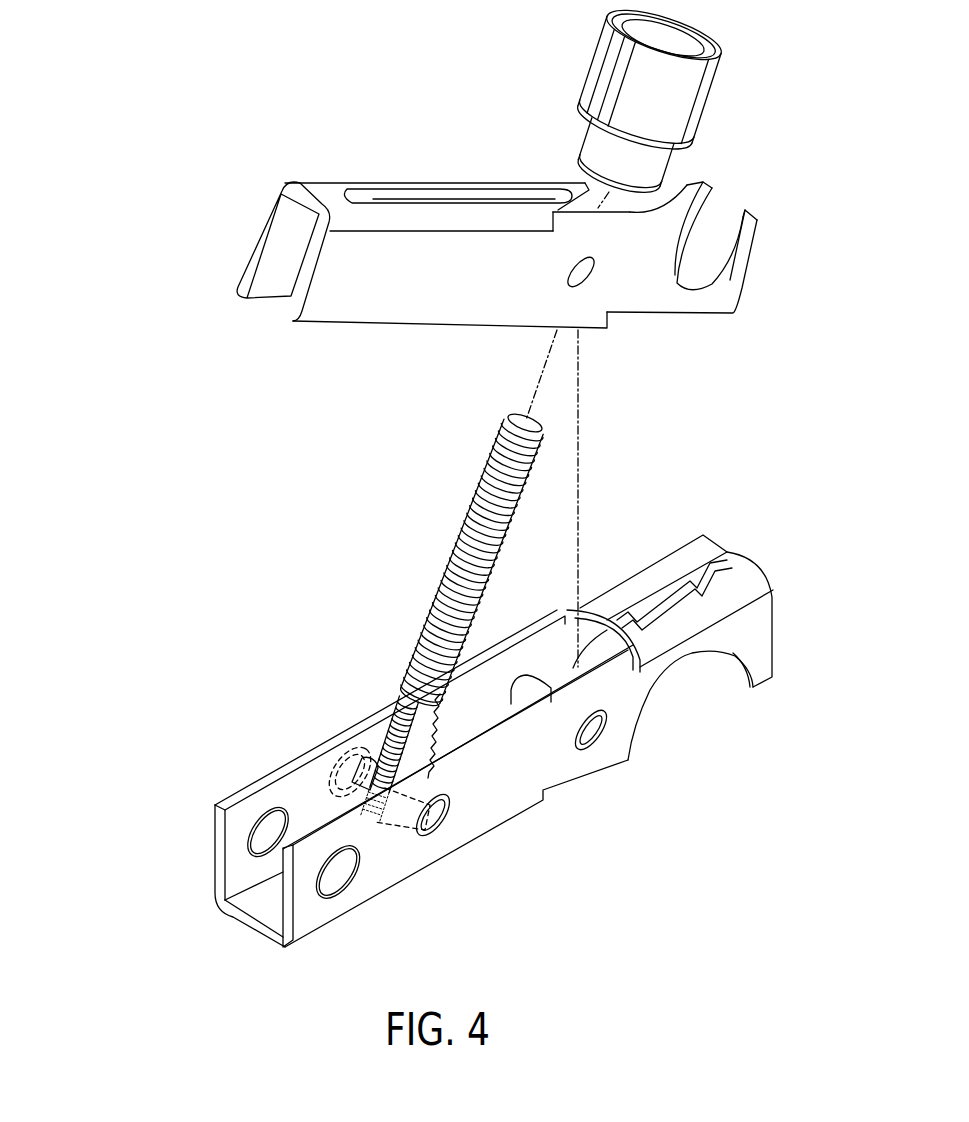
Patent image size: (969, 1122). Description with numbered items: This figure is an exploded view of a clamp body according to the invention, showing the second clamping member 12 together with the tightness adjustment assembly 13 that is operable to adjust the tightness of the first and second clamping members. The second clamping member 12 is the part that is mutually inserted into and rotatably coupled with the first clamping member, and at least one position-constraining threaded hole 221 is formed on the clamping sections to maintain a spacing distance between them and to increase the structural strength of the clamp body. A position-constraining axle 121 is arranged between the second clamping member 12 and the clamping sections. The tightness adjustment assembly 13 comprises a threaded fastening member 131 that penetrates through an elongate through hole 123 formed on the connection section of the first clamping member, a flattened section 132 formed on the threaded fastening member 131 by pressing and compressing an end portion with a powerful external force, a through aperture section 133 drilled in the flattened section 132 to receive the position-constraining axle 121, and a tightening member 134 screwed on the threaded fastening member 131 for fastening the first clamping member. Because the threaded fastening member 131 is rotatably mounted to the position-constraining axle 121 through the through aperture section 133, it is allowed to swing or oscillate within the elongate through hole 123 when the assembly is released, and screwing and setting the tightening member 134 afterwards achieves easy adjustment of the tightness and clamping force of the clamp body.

The second clamping member 12 is at (434, 746).
The position-constraining axle 121 is at (448, 813).
The elongate through hole 123 is at (435, 203).
The tightness adjustment assembly 13 is at (107, 130).
The threaded fastening member 131 is at (495, 442).
The flattened section 132 is at (400, 700).
The through aperture section 133 is at (350, 745).
The tightening member 134 is at (577, 93).
The position-constraining threaded hole 221 is at (347, 883).